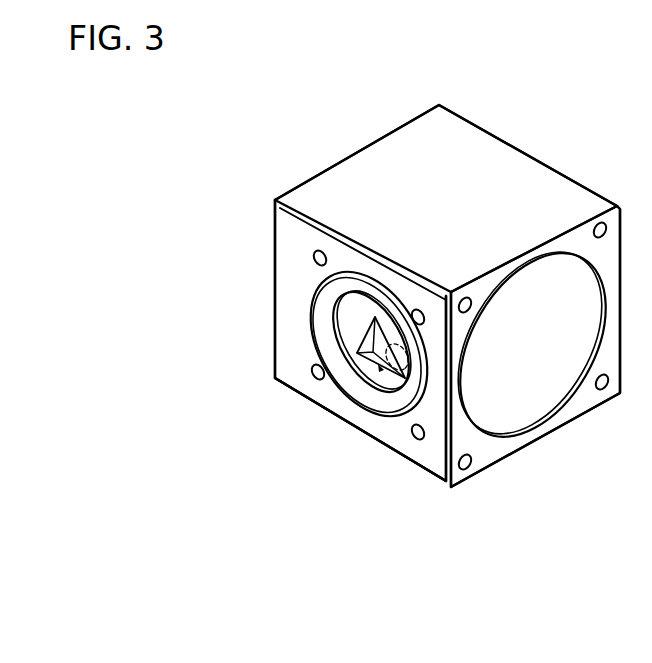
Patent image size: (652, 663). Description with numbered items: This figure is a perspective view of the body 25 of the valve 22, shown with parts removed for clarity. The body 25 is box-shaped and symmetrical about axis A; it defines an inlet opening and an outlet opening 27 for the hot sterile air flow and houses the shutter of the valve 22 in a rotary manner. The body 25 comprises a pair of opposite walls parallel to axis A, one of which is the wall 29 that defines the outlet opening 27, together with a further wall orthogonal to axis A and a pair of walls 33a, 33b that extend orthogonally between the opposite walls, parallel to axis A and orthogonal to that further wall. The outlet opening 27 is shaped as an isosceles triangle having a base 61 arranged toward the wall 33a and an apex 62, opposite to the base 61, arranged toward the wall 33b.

The valve 22 is at (371, 186).
The body 25 is at (506, 112).
The outlet opening 27 is at (406, 385).
The wall 29 is at (428, 450).
The wall 33a is at (434, 478).
The wall 33b is at (523, 192).
The base 61 is at (366, 378).
The apex 62 is at (384, 325).